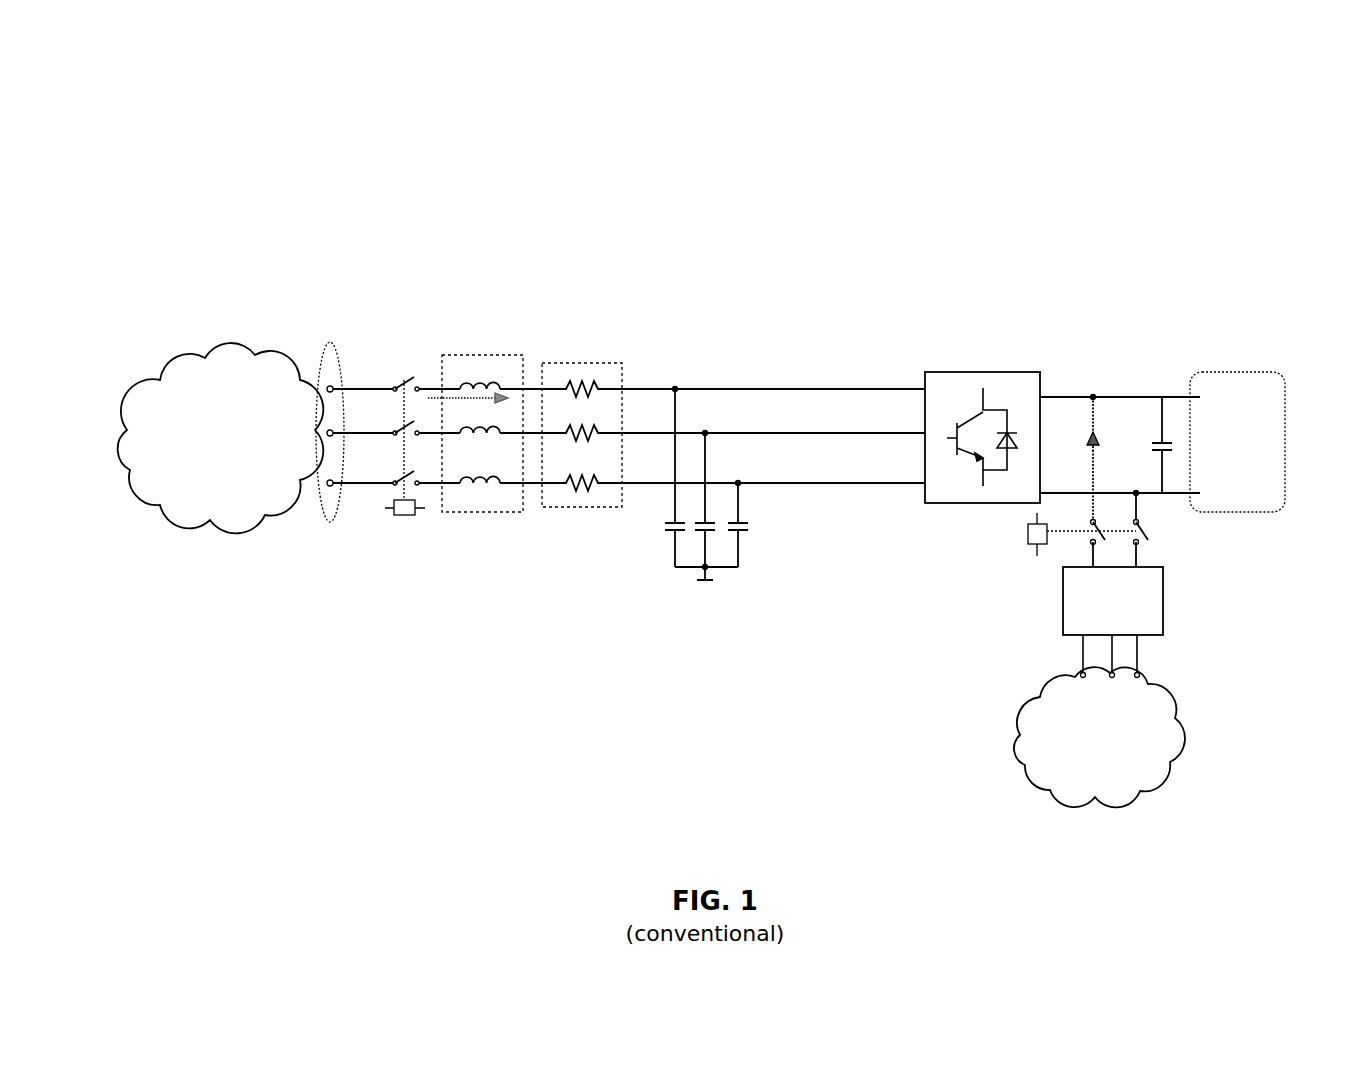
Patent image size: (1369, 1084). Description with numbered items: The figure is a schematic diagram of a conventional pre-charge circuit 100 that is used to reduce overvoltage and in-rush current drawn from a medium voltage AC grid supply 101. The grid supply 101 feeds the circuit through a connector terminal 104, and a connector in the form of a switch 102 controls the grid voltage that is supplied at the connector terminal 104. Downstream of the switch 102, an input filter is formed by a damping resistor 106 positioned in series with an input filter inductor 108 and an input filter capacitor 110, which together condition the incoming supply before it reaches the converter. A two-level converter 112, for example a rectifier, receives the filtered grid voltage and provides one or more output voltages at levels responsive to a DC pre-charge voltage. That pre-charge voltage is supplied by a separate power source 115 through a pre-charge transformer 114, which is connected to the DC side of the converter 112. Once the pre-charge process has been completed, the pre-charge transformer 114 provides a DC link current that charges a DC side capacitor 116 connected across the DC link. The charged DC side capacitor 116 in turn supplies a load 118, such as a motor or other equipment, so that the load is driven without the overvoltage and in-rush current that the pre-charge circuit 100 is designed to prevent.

The pre-charge circuit 100 is at (766, 279).
The medium voltage AC grid supply 101 is at (221, 438).
The connector (switch) 102 is at (385, 527).
The connector terminal 104 is at (338, 340).
The damping resistor 106 is at (623, 357).
The input filter inductor 108 is at (505, 338).
The input filter capacitor 110 is at (688, 567).
The two-level converter 112 is at (950, 515).
The pre-charge transformer 114 is at (1163, 602).
The power source 115 is at (1099, 737).
The DC side capacitor 116 is at (1168, 435).
The load 118 is at (1237, 442).